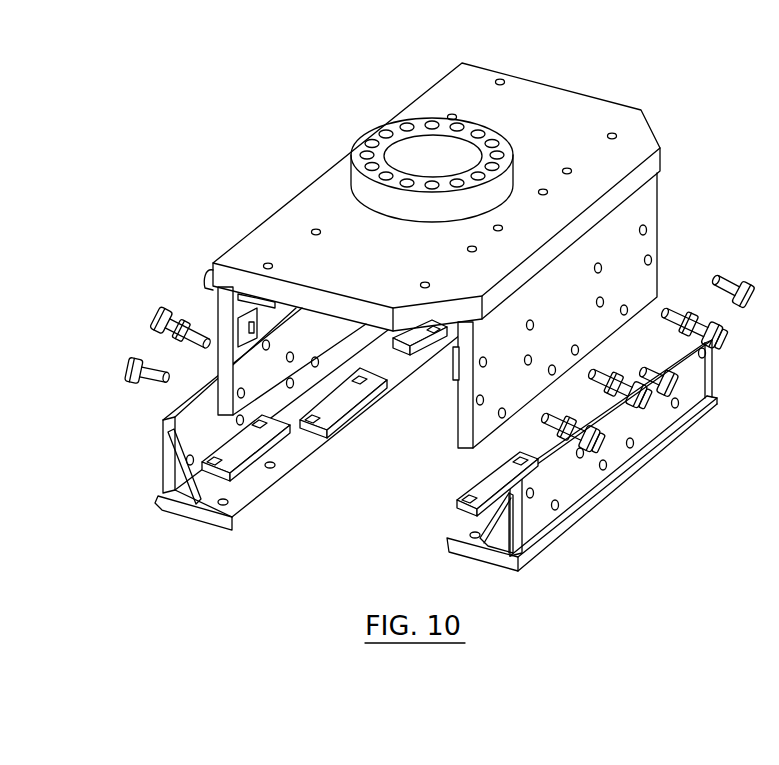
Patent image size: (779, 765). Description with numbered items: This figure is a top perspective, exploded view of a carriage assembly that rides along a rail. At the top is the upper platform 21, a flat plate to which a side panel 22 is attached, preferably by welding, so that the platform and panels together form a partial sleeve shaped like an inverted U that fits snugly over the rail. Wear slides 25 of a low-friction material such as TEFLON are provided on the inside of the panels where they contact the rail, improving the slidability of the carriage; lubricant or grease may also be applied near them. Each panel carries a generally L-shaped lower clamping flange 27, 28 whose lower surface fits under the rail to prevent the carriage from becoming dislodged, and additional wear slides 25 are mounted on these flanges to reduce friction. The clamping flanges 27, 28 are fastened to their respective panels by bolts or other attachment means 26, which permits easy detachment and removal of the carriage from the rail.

The upper platform 21 is at (562, 103).
The side panel 22 is at (643, 207).
The wear slides 25 is at (345, 393).
The attachment means 26 is at (728, 275).
The lower clamping flange 27 is at (583, 473).
The lower clamping flange 28 is at (208, 488).